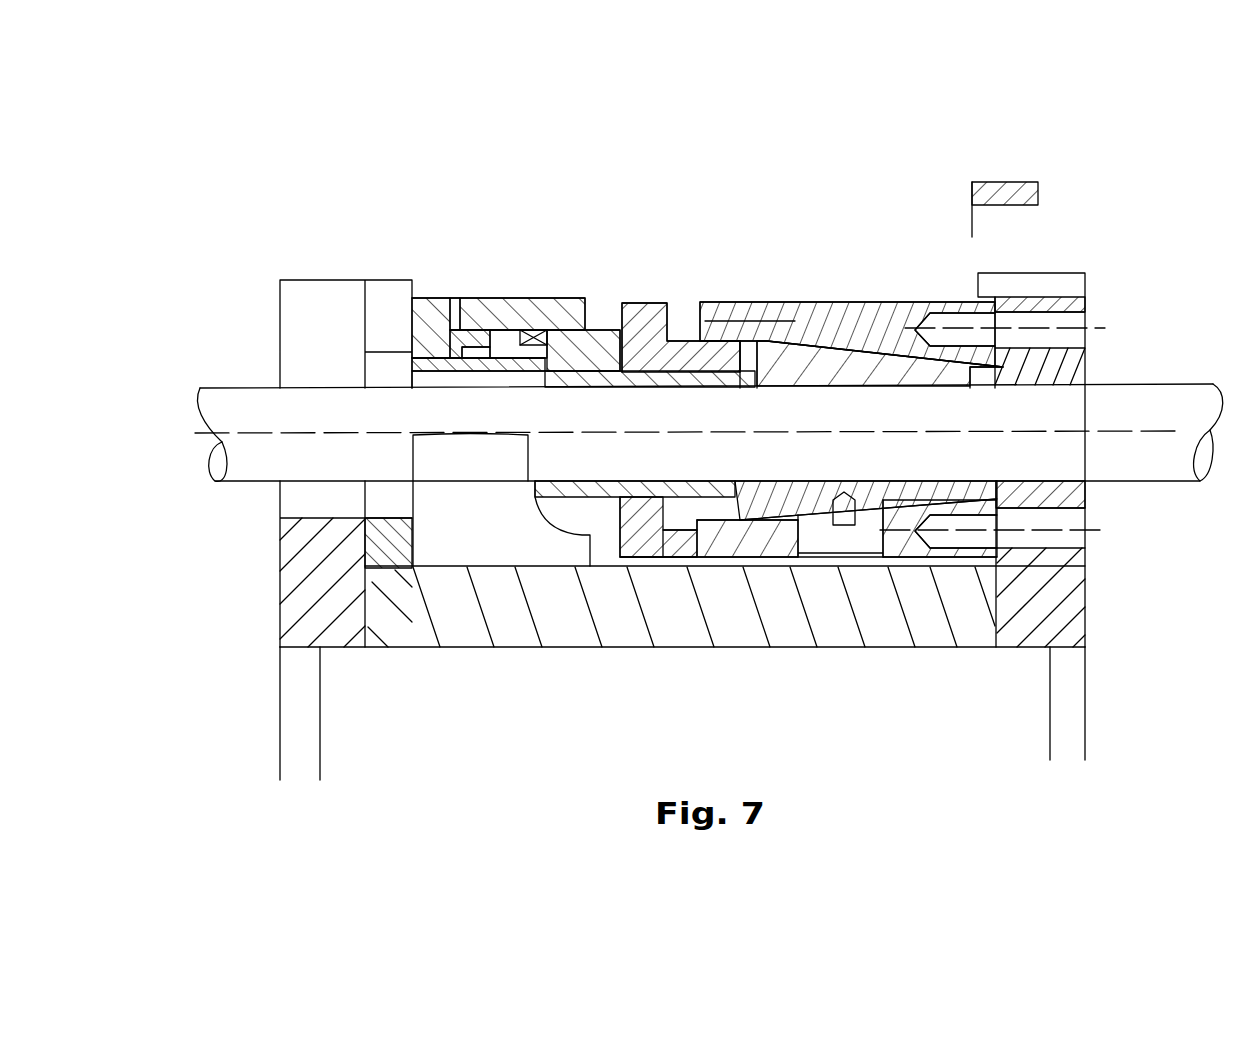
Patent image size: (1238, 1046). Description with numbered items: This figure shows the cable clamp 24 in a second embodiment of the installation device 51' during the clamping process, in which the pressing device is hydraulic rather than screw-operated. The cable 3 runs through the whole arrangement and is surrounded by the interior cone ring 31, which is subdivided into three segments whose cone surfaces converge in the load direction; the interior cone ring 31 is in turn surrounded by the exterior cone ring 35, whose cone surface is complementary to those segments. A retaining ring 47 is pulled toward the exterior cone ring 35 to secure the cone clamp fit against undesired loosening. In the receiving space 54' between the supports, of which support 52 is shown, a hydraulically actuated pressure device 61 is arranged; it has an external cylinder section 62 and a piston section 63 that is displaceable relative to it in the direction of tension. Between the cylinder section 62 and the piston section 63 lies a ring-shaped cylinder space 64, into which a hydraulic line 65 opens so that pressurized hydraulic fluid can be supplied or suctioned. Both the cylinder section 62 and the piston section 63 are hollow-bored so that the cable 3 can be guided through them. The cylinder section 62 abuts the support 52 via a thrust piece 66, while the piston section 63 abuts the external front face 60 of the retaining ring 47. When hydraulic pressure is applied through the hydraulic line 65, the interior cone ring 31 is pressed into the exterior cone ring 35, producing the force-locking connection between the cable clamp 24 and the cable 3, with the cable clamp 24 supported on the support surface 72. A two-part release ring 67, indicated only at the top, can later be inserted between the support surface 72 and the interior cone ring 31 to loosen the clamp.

The cable 3 is at (1157, 408).
The cable clamp 24 is at (900, 216).
The interior cone ring 31 is at (818, 358).
The exterior cone ring 35 is at (775, 545).
The retaining ring 47 is at (647, 545).
The installation device 51' is at (868, 278).
The support 52 is at (300, 318).
The receiving space 54' is at (650, 239).
The external front face 60 is at (615, 298).
The hydraulically actuated pressure device 61 is at (490, 208).
The cylinder section 62 is at (500, 298).
The piston section 63 is at (592, 298).
The ring-shaped cylinder space 64 is at (540, 298).
The hydraulic line 65 is at (457, 298).
The thrust piece 66 is at (407, 570).
The release ring 67 is at (1013, 186).
The support surface 72 is at (552, 118).